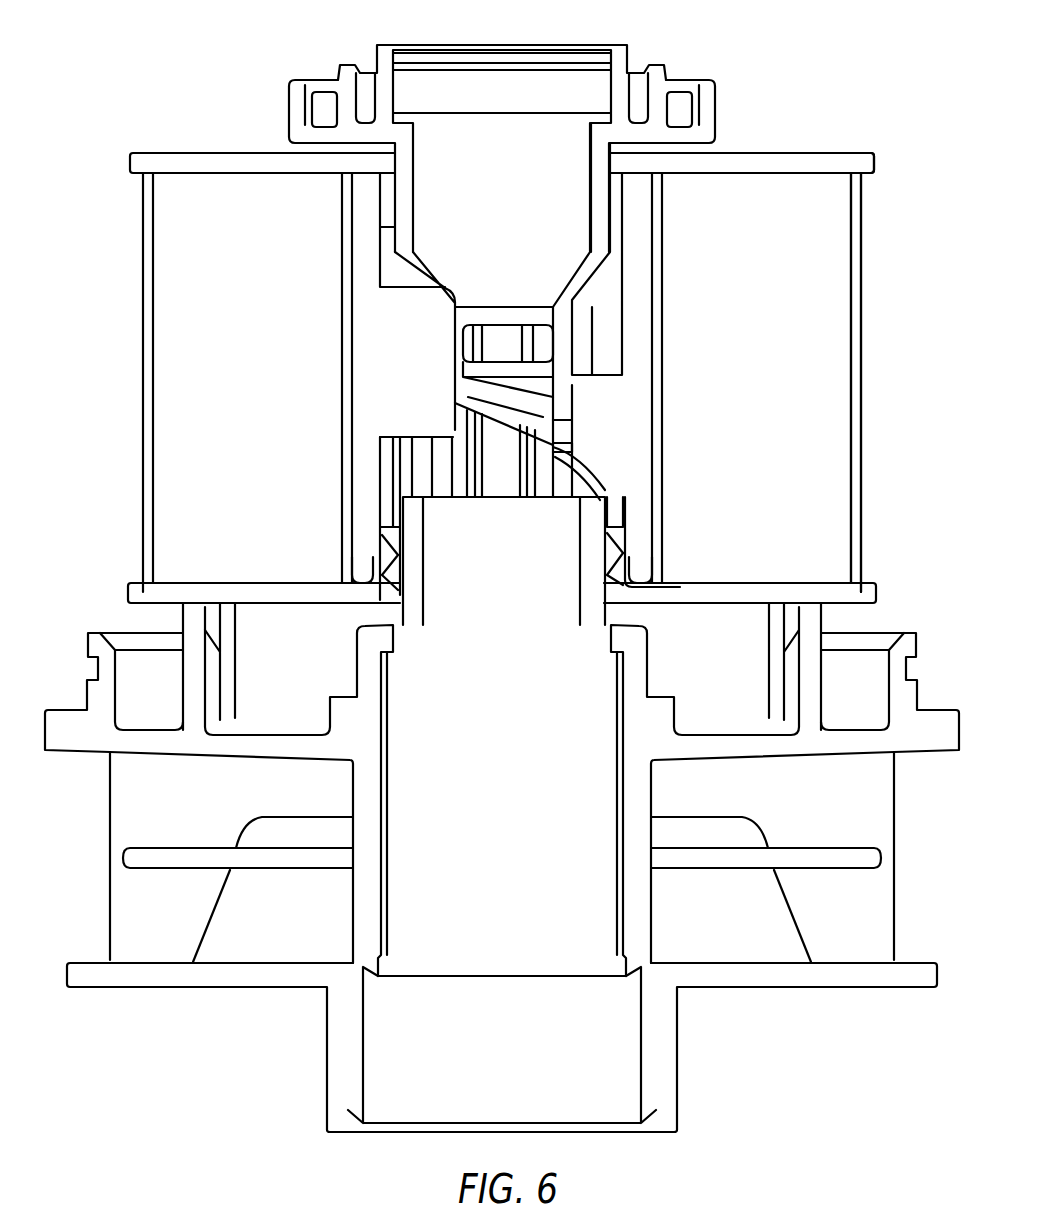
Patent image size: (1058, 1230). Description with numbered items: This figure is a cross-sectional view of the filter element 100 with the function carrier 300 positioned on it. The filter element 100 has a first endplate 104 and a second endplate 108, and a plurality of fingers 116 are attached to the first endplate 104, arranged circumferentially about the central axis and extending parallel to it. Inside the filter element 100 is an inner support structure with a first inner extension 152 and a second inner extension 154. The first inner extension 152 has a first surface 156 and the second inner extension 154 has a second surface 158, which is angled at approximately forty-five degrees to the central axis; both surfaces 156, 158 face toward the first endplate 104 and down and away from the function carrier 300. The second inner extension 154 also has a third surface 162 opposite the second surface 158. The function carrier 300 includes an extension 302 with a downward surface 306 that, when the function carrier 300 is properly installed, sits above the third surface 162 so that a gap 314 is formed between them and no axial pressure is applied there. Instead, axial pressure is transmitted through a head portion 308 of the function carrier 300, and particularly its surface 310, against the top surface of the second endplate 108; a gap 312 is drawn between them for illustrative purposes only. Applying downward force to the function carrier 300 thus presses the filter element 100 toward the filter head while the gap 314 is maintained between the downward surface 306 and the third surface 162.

The filter element 100 is at (808, 153).
The first endplate 104 is at (836, 600).
The second endplate 108 is at (200, 153).
The fingers 116 is at (777, 712).
The first inner extension 152 is at (412, 356).
The second inner extension 154 is at (582, 447).
The first surface 156 is at (395, 457).
The second surface 158 is at (593, 487).
The third surface 162 is at (597, 420).
The function carrier 300 is at (632, 57).
The extension 302 is at (565, 325).
The downward surface 306 is at (565, 448).
The head portion 308 is at (720, 117).
The surface 310 is at (688, 150).
The gap 312 is at (283, 141).
The gap 314 is at (590, 450).